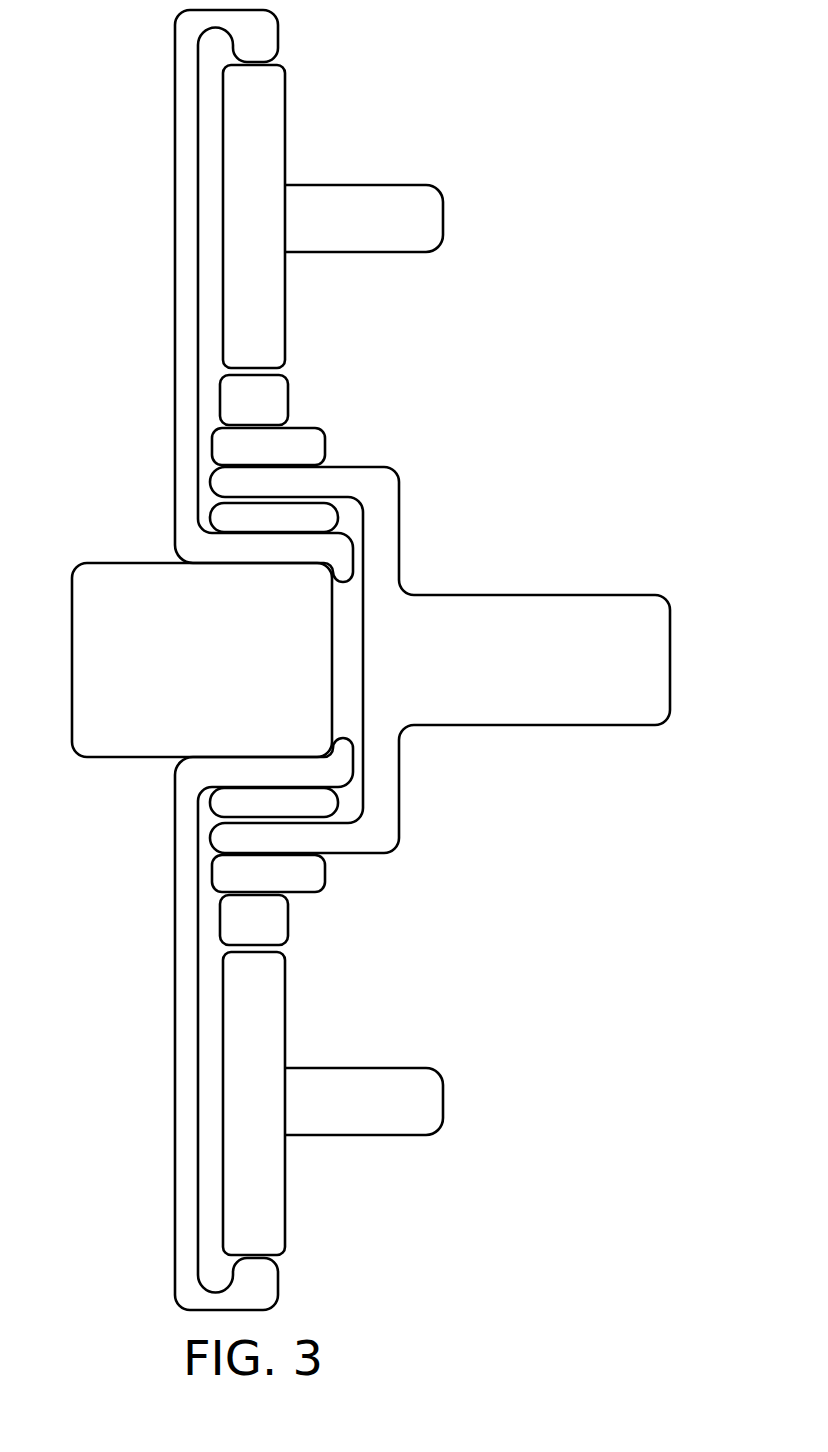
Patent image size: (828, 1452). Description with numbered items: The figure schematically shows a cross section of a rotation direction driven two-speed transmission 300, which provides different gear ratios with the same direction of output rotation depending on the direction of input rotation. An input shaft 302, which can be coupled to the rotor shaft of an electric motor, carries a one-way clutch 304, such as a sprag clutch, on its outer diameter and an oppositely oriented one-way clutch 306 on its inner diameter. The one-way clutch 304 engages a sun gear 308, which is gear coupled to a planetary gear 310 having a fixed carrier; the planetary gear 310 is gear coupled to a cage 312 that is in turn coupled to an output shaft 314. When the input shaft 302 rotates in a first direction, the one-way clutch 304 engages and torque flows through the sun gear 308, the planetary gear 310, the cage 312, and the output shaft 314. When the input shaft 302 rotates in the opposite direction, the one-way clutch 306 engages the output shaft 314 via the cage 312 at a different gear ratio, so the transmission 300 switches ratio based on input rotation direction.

The transmission 300 is at (503, 93).
The input shaft 302 is at (249, 495).
The one-way clutch 304 is at (249, 457).
The one-way clutch 306 is at (249, 528).
The sun gear 308 is at (235, 412).
The planetary gear 310 is at (234, 229).
The cage 312 is at (175, 458).
The output shaft 314 is at (173, 667).